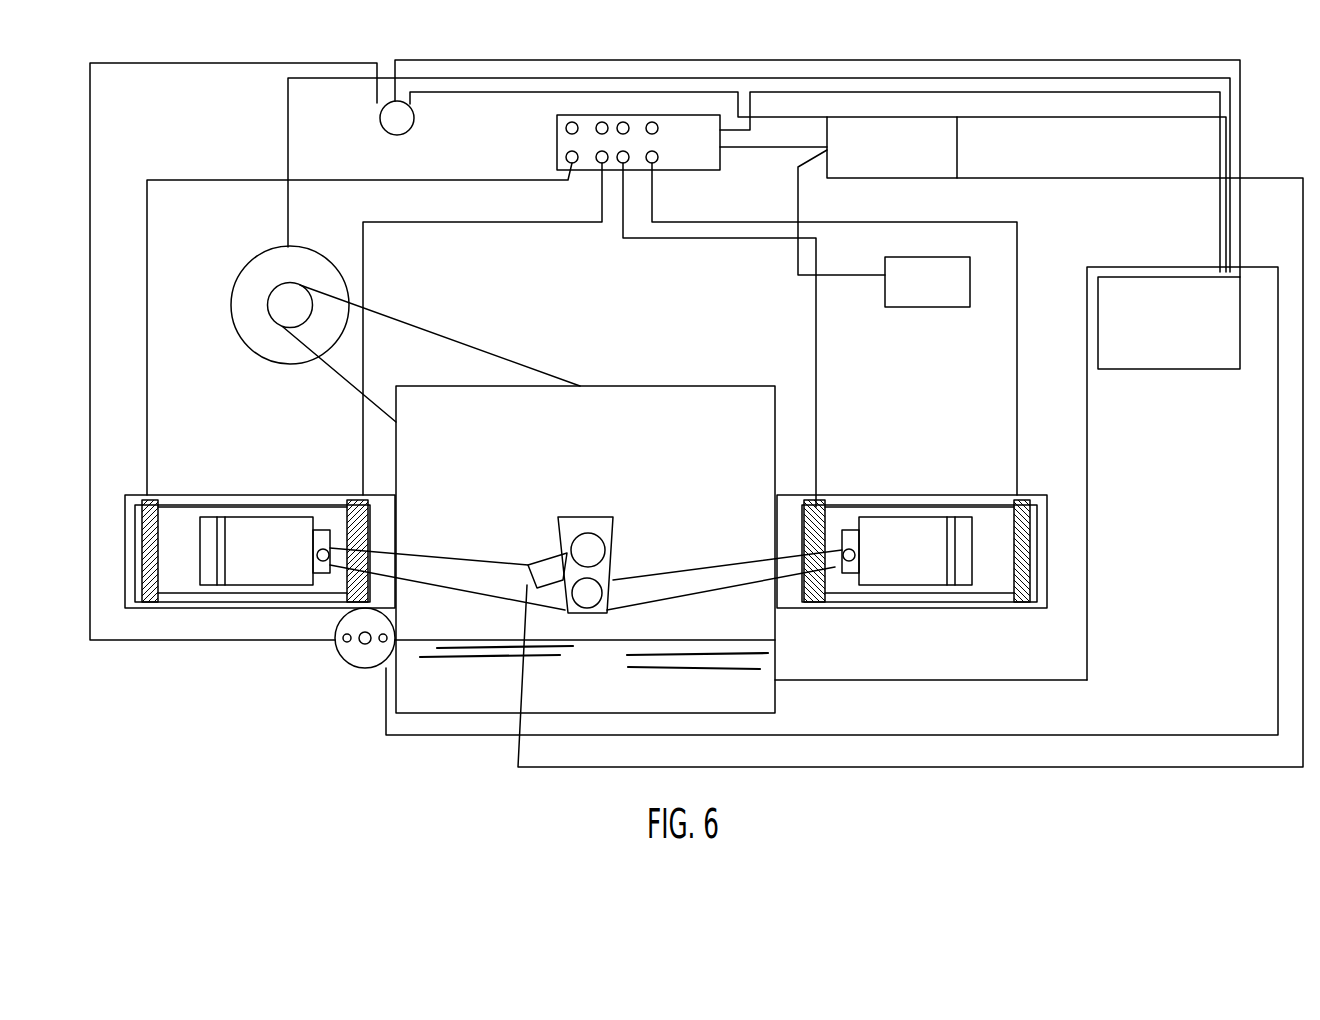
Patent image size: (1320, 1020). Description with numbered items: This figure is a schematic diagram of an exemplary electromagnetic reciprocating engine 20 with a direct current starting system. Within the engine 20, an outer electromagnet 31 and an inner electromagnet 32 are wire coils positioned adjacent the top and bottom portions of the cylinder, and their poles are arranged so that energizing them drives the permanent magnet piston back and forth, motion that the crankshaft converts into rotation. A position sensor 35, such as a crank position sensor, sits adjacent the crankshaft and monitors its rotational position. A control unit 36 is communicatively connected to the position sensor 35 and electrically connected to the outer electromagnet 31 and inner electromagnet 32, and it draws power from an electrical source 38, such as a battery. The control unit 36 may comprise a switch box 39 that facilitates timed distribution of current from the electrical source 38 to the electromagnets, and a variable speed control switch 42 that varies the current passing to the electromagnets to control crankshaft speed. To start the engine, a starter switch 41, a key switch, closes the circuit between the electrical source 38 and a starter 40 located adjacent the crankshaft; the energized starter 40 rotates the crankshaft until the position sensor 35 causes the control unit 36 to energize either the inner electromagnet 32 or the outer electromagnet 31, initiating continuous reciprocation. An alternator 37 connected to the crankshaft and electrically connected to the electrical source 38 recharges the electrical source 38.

The electromagnetic reciprocating engine 20 is at (581, 432).
The outer electromagnet 31 is at (347, 495).
The inner electromagnet 32 is at (586, 507).
The position sensor 35 is at (527, 563).
The control unit 36 is at (957, 153).
The alternator 37 is at (262, 252).
The electrical source 38 is at (1145, 333).
The switch box 39 is at (557, 135).
The starter 40 is at (340, 652).
The starter switch 41 is at (381, 128).
The variable speed control switch 42 is at (933, 307).